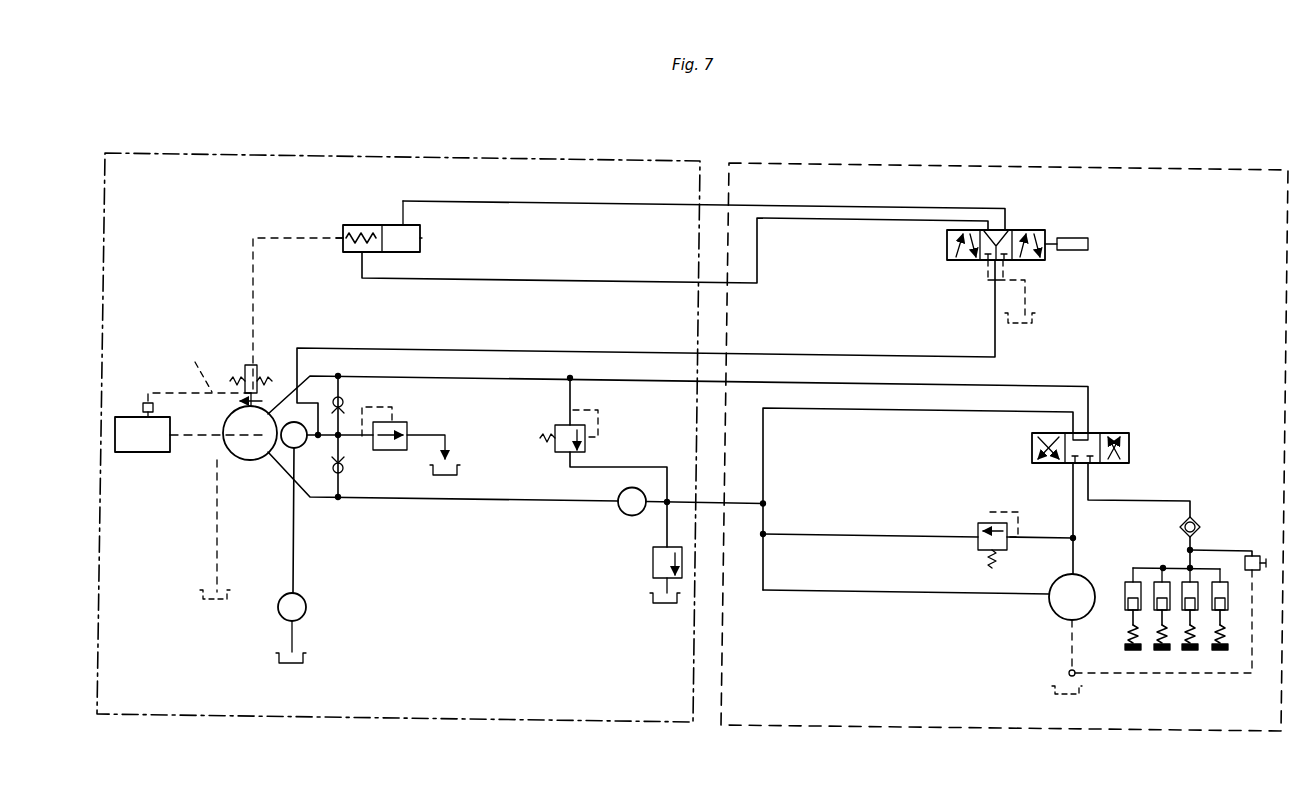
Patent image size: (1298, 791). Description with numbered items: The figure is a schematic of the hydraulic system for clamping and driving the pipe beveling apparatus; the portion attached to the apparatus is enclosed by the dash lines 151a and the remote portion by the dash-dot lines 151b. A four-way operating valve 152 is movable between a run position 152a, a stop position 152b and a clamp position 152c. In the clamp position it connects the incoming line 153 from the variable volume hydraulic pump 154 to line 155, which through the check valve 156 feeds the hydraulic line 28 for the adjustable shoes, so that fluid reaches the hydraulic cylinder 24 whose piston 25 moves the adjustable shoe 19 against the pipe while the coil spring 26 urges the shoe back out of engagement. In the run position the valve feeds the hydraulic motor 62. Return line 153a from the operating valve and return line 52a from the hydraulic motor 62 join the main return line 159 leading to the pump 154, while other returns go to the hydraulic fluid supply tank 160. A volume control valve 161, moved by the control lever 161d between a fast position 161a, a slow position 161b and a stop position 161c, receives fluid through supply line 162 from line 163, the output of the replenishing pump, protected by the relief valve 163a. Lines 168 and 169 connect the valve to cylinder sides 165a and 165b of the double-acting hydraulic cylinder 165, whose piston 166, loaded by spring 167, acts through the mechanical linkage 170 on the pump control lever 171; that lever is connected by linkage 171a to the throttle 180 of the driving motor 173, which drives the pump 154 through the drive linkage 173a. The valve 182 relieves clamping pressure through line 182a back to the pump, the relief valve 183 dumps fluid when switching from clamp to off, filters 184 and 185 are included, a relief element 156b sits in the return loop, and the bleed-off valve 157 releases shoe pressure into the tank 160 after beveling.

The adjustable shoe 19 is at (1229, 650).
The hydraulic cylinder 24 is at (1229, 590).
The piston 25 is at (1225, 619).
The coil spring 26 is at (1225, 639).
The hydraulic line 28 is at (1222, 568).
The return line 52a is at (864, 596).
The hydraulic motor 62 is at (1072, 597).
The dash lines 151a is at (897, 727).
The dash-dot lines 151b is at (523, 724).
The four-way operating valve 152 is at (1132, 428).
The run position 152a is at (1030, 449).
The stop position 152b is at (1090, 432).
The clamp position 152c is at (1131, 451).
The incoming line 153 is at (792, 383).
The return line 153a is at (793, 410).
The variable volume hydraulic pump 154 is at (253, 462).
The line 155 is at (1124, 501).
The check valve 156 is at (1200, 519).
The relief valve 156b is at (918, 540).
The bleed-off valve 157 is at (1258, 554).
The main return line 159 is at (684, 500).
The hydraulic fluid supply tank 160 is at (1040, 321).
The volume control valve 161 is at (1043, 224).
The fast position 161a is at (950, 262).
The slow position 161b is at (1000, 231).
The stop position 161c is at (1046, 259).
The control lever 161d is at (1090, 245).
The hydraulic fluid supply line 162 is at (560, 353).
The line 163 is at (331, 445).
The relief valve 163a is at (389, 452).
The double-acting hydraulic cylinder 165 is at (366, 224).
The cylinder side 165a is at (422, 238).
The cylinder side 165b is at (340, 234).
The piston 166 is at (397, 224).
The spring 167 is at (352, 228).
The line 168 is at (615, 203).
The hydraulic line 169 is at (620, 280).
The mechanical linkage 170 is at (253, 249).
The pump control lever 171 is at (250, 364).
The mechanical linkage 171a is at (191, 369).
The driving motor 173 is at (142, 434).
The drive linkage 173a is at (197, 438).
The throttle 180 is at (146, 402).
The valve 182 is at (551, 430).
The line 182a is at (622, 467).
The relief valve 183 is at (652, 556).
The filter 184 is at (618, 508).
The filter 185 is at (306, 604).